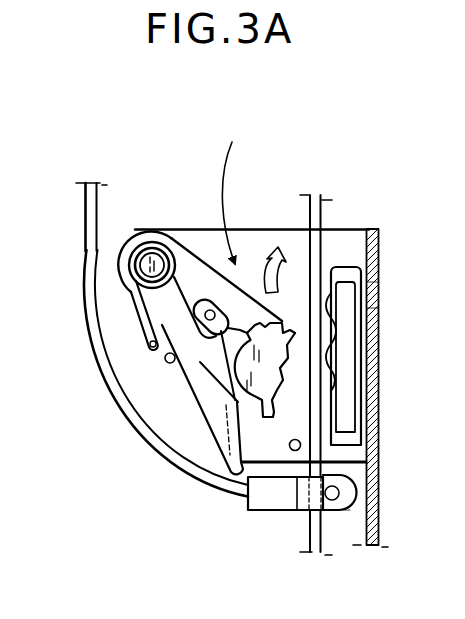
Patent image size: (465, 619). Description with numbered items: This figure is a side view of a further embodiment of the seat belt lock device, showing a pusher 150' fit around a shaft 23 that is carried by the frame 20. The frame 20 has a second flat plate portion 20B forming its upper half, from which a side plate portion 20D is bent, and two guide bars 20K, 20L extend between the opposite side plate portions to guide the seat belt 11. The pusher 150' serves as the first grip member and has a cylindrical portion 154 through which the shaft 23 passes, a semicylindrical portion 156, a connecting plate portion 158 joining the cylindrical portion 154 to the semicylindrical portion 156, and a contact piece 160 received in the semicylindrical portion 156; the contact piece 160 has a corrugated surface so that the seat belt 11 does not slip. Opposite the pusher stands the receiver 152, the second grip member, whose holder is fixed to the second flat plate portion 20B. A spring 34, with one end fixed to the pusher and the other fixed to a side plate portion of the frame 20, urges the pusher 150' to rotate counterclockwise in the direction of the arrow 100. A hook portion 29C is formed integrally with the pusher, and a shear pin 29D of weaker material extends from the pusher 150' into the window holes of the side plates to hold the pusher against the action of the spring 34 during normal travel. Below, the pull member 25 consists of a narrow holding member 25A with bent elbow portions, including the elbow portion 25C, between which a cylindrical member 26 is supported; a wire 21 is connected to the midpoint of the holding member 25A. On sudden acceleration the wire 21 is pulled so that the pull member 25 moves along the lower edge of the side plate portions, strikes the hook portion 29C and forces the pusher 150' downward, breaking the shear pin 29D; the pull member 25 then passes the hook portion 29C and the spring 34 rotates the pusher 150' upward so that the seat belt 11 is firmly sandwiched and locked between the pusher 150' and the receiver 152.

The seat belt 11 is at (325, 213).
The frame 20 is at (379, 538).
The second flat plate portion 20B is at (378, 309).
The side plate portion 20D is at (170, 385).
The guide bar 20K is at (165, 358).
The guide bar 20L is at (301, 445).
The wire 21 is at (83, 204).
The shaft 23 is at (143, 266).
The pull member 25 is at (234, 515).
The holding member 25A is at (268, 514).
The elbow portion 25C is at (346, 513).
The cylindrical member 26 is at (348, 484).
The hook portion 29C is at (216, 428).
The shear pin 29D is at (170, 234).
The spring 34 is at (140, 315).
The arrow 100 is at (297, 290).
The pusher 150' is at (241, 185).
The receiver 152 is at (380, 286).
The cylindrical portion 154 is at (138, 234).
The semicylindrical portion 156 is at (253, 320).
The connecting plate portion 158 is at (220, 272).
The contact piece 160 is at (278, 353).